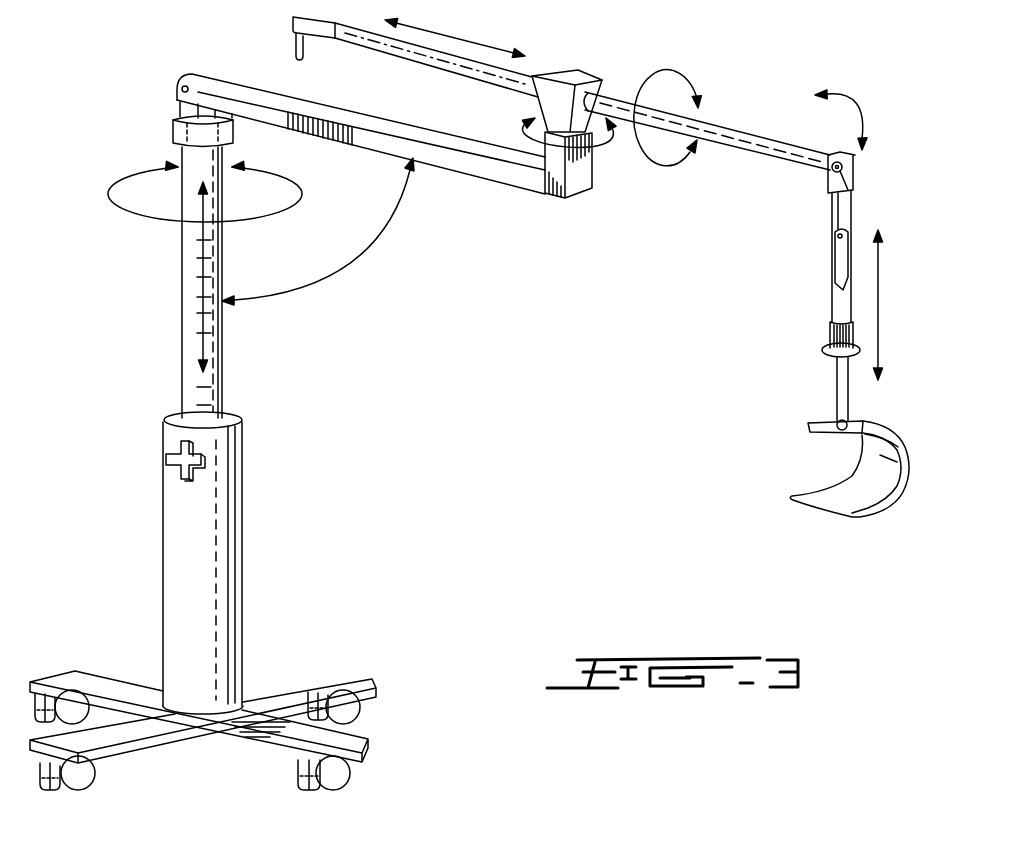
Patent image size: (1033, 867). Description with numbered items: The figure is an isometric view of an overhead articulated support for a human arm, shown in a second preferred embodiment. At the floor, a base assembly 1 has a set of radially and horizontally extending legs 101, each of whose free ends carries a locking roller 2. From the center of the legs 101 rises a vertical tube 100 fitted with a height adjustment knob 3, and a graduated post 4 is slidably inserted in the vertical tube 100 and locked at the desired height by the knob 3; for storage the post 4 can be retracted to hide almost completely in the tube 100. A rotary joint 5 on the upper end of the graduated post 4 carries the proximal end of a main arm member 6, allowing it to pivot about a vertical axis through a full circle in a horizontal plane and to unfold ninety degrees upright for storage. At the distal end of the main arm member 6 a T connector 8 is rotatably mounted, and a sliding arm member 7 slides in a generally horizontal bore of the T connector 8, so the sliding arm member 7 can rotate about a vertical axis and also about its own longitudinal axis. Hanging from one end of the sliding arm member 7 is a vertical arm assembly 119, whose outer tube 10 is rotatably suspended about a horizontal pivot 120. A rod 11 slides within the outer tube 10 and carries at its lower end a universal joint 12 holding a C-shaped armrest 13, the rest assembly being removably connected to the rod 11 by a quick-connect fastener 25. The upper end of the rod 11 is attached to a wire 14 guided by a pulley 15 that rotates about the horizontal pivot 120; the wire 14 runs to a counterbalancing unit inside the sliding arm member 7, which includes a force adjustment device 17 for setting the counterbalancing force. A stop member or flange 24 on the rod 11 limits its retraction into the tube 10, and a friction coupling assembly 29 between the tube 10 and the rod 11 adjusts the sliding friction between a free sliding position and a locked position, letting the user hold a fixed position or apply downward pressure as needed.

The base assembly 1 is at (223, 590).
The locking roller 2 is at (360, 710).
The height adjustment knob 3 is at (168, 460).
The graduated post 4 is at (217, 355).
The rotary joint 5 is at (192, 109).
The main arm member 6 is at (473, 167).
The sliding arm member 7 is at (740, 137).
The T connector 8 is at (578, 80).
The outer tube 10 is at (832, 218).
The rod 11 is at (834, 270).
The universal joint 12 is at (848, 422).
The armrest 13 is at (850, 480).
The wire 14 is at (843, 207).
The pulley 15 is at (856, 162).
The force adjustment device 17 is at (296, 43).
The stop member (flange) 24 is at (824, 348).
The quick-connect fastener 25 is at (808, 424).
The friction coupling assembly 29 is at (830, 331).
The vertical tube 100 is at (242, 506).
The legs 101 is at (272, 737).
The vertical arm assembly 119 is at (832, 292).
The horizontal pivot 120 is at (828, 176).